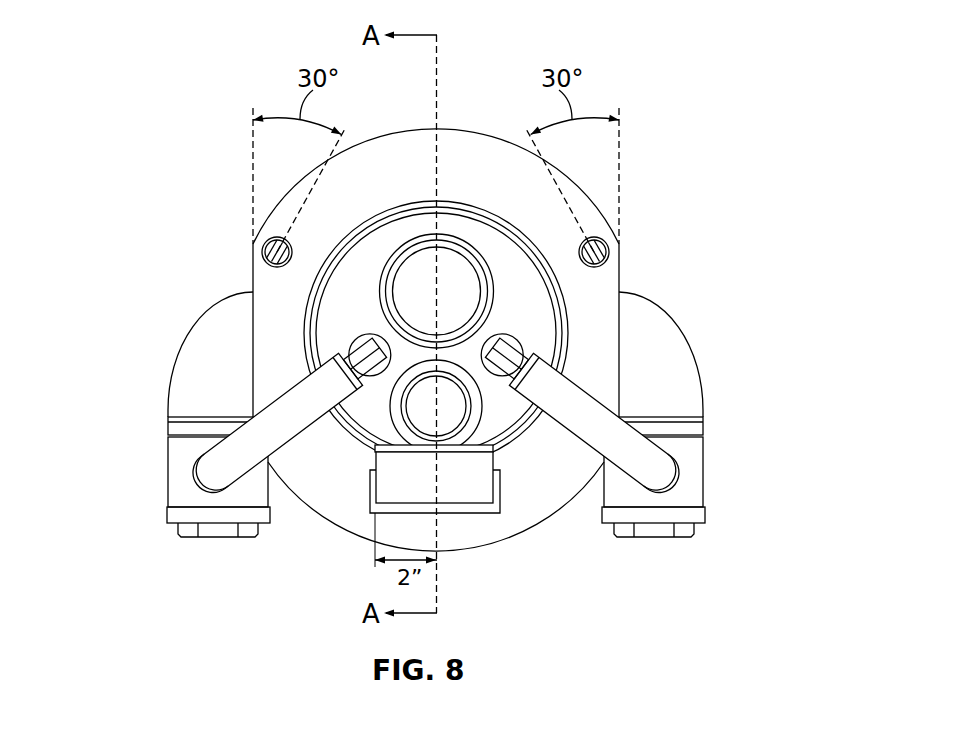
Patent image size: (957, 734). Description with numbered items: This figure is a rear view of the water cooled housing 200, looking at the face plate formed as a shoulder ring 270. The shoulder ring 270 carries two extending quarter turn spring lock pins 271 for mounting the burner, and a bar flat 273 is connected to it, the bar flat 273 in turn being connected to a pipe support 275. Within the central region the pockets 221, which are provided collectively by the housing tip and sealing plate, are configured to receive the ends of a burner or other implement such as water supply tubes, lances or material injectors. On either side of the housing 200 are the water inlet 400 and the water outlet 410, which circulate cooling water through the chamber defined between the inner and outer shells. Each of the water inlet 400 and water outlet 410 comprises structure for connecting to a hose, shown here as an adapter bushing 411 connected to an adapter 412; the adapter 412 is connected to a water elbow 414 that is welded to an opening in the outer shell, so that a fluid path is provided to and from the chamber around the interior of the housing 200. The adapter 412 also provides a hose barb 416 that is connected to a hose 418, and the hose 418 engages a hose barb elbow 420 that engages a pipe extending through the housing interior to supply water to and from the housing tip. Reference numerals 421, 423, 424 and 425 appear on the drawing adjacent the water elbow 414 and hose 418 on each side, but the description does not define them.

The water cooled housing 200 is at (622, 76).
The pockets 221 is at (420, 390).
The shoulder ring 270 is at (598, 303).
The quarter turn spring lock pins 271 is at (263, 250).
The bar flat 273 is at (493, 512).
The pipe support 275 is at (477, 477).
The water inlet 400 is at (207, 538).
The water outlet 410 is at (667, 538).
The adapter bushing 411 is at (231, 529).
The adapter 412 is at (170, 468).
The water elbow 414 is at (200, 357).
The hose barb 416 is at (197, 489).
The hose 418 is at (278, 424).
The hose barb elbow 420 is at (358, 353).
The left mounting band 421 is at (158, 407).
The left tube collar 423 is at (260, 483).
The right elbow surface 424 is at (703, 356).
The right tube collar 425 is at (621, 486).